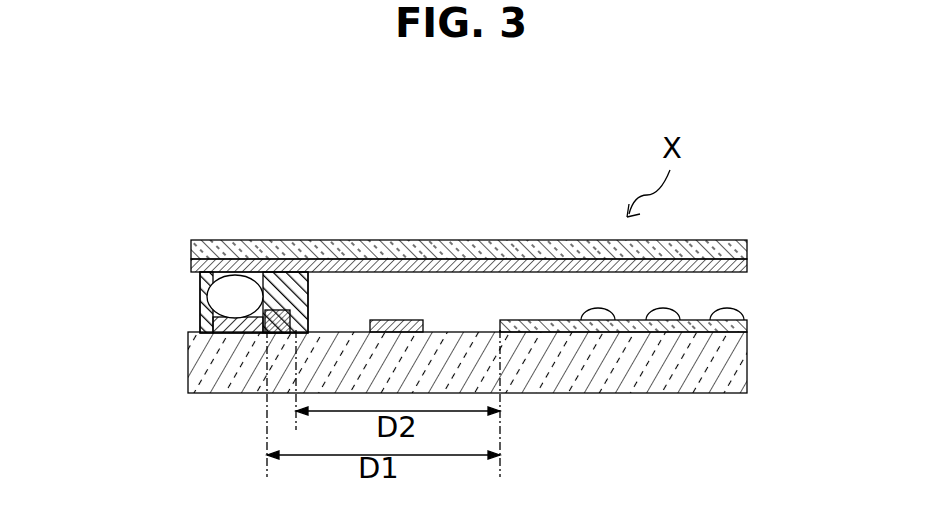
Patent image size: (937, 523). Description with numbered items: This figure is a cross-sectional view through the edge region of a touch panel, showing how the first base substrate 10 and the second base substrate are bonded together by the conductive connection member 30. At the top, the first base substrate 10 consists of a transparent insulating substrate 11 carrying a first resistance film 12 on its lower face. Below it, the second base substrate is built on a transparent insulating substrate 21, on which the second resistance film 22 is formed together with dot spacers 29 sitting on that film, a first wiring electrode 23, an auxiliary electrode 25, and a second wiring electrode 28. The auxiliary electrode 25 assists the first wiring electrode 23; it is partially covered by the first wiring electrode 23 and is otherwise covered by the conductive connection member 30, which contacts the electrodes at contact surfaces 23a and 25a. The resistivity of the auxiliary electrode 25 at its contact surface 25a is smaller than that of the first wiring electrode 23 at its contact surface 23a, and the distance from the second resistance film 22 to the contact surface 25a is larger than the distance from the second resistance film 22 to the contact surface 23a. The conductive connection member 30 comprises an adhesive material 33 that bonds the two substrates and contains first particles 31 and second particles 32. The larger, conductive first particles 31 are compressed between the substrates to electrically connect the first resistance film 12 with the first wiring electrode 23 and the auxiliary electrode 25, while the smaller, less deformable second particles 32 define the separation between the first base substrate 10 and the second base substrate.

The first base substrate 10 is at (403, 253).
The transparent insulating substrate 11 is at (200, 250).
The first resistance film 12 is at (205, 266).
The transparent insulating substrate 21 is at (737, 370).
The second resistance film 22 is at (738, 326).
The first wiring electrode 23 is at (270, 322).
The contact surface 23a is at (293, 323).
The auxiliary electrode 25 is at (188, 290).
The contact surface 25a is at (210, 323).
The second wiring electrode 28 is at (420, 318).
The dot spacers 29 is at (663, 312).
The conductive connection member 30 is at (245, 291).
The first particles 31 is at (311, 262).
The second particles 32 is at (268, 290).
The adhesive material 33 is at (206, 278).